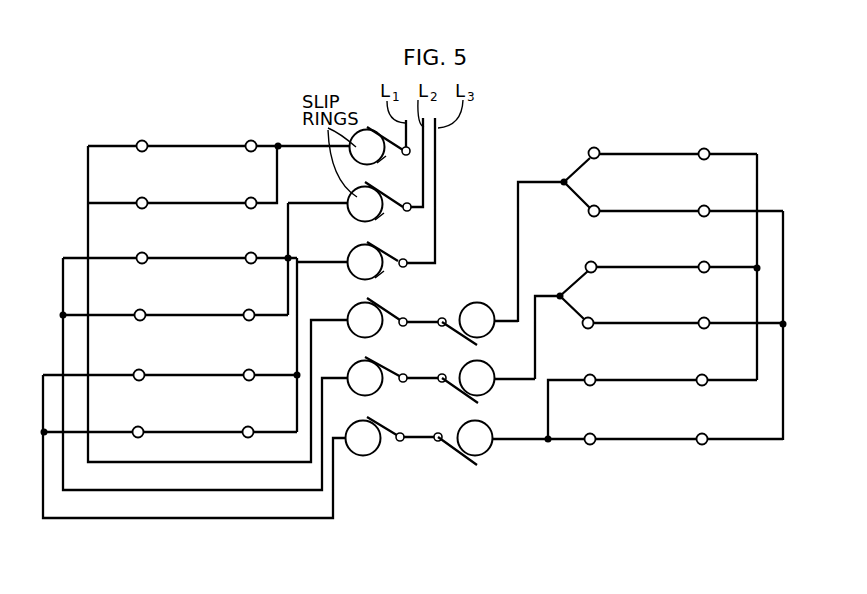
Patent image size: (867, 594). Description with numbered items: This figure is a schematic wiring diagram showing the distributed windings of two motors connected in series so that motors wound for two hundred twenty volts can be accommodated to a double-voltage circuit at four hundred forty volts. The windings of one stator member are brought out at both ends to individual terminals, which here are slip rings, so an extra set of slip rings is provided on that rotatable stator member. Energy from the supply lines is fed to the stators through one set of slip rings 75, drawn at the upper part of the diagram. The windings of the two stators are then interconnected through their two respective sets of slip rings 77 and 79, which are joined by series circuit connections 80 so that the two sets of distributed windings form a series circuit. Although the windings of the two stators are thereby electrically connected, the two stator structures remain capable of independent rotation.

The slip rings 75 is at (390, 200).
The slip rings 77 is at (370, 315).
The slip rings 79 is at (475, 317).
The series circuit connections 80 is at (422, 342).